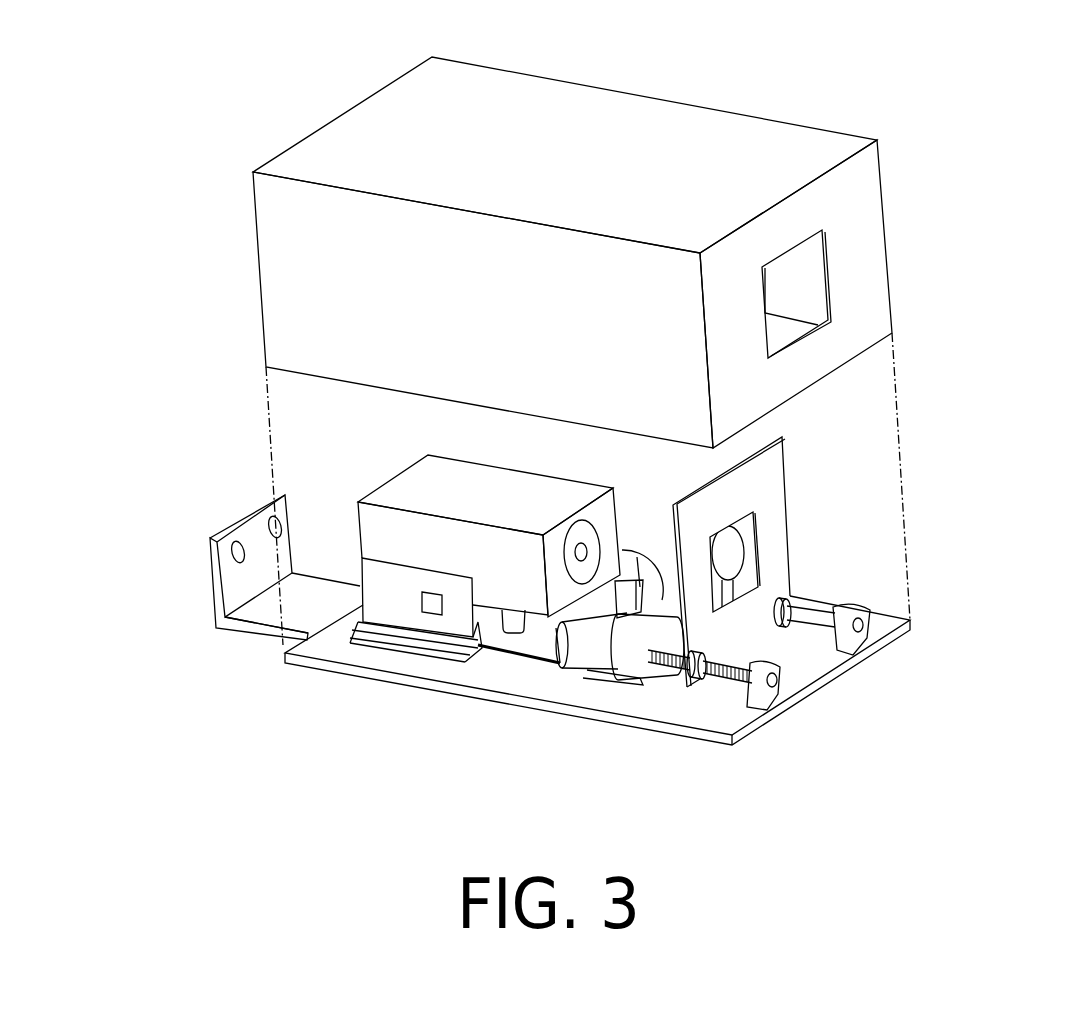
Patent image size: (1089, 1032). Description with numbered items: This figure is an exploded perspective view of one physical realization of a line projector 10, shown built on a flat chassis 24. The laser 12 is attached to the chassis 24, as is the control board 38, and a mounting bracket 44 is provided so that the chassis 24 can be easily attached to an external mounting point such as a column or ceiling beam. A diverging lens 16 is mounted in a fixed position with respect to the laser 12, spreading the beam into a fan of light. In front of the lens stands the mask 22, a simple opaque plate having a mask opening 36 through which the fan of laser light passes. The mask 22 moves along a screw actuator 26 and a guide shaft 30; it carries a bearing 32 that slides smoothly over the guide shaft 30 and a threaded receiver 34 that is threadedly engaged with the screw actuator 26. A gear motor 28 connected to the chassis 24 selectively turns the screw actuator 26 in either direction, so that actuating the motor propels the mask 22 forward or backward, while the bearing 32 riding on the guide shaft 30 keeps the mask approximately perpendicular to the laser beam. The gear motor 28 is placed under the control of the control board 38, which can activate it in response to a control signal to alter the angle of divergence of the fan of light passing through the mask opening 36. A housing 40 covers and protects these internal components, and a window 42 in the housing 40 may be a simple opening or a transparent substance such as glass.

The line projector 10 is at (315, 780).
The laser 12 is at (375, 518).
The diverging lens 16 is at (794, 643).
The mask 22 is at (861, 503).
The chassis 24 is at (597, 703).
The screw actuator 26 is at (783, 743).
The gear motor 28 is at (552, 700).
The guide shaft 30 is at (941, 581).
The bearing 32 is at (911, 542).
The threaded receiver 34 is at (704, 738).
The mask opening 36 is at (879, 508).
The control board 38 is at (350, 645).
The housing 40 is at (581, 338).
The window 42 is at (905, 279).
The mounting bracket 44 is at (244, 567).